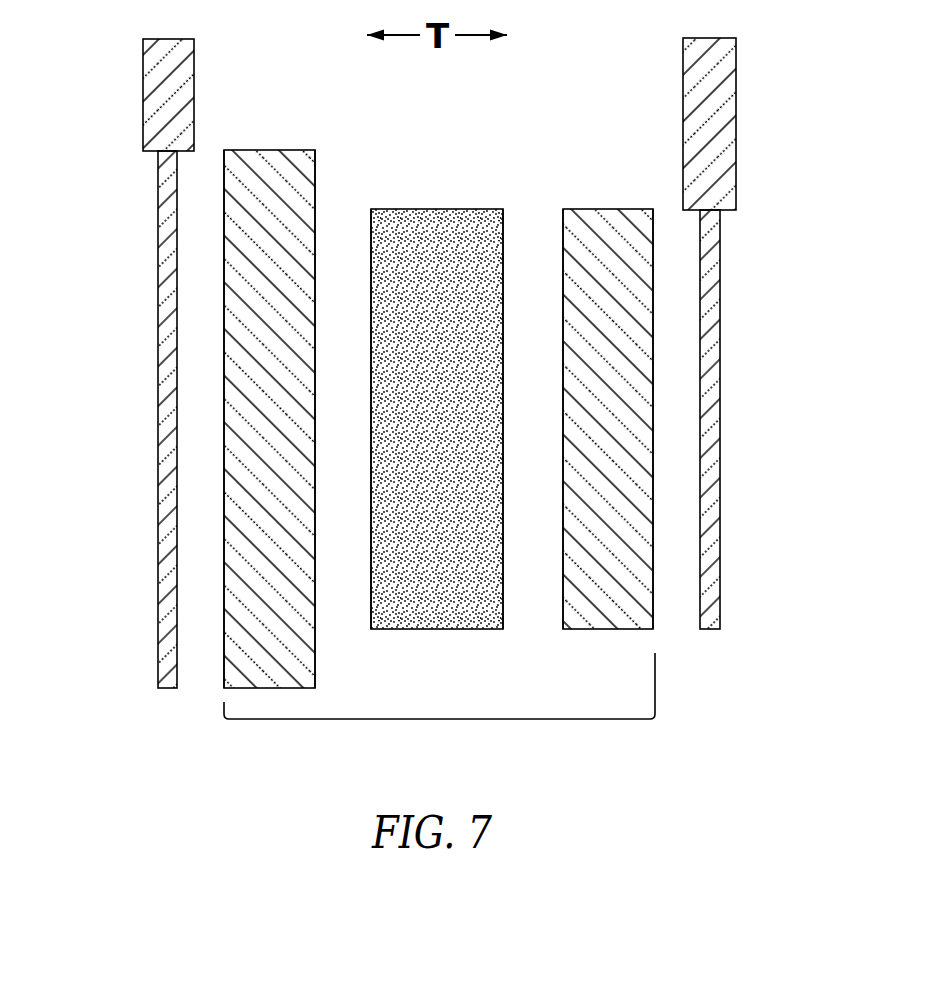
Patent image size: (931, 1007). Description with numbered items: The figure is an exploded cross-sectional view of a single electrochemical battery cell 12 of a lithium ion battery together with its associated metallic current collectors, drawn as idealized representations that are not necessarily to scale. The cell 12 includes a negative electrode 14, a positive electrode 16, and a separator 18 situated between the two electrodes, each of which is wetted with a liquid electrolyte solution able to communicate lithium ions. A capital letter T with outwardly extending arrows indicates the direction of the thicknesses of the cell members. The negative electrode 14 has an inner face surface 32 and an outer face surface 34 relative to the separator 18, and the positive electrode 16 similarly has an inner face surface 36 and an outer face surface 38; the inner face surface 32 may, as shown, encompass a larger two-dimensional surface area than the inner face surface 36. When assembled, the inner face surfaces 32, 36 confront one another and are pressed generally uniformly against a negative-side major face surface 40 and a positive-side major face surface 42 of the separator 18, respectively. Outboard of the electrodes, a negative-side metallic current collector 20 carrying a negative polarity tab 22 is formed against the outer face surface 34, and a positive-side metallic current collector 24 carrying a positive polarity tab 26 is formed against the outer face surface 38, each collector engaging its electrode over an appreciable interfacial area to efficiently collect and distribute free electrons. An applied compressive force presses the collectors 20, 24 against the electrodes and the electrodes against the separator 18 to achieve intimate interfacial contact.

The electrochemical battery cell 12 is at (437, 719).
The negative electrode 14 is at (273, 150).
The positive electrode 16 is at (607, 207).
The separator 18 is at (437, 208).
The negative-side metallic current collector 20 is at (157, 315).
The negative polarity tab 22 is at (165, 89).
The positive-side metallic current collector 24 is at (720, 338).
The positive polarity tab 26 is at (713, 89).
The inner face surface 32 is at (316, 289).
The outer face surface 34 is at (224, 235).
The inner face surface 36 is at (563, 290).
The outer face surface 38 is at (653, 263).
The negative-side major face surface 40 is at (371, 355).
The positive-side major face surface 42 is at (503, 463).